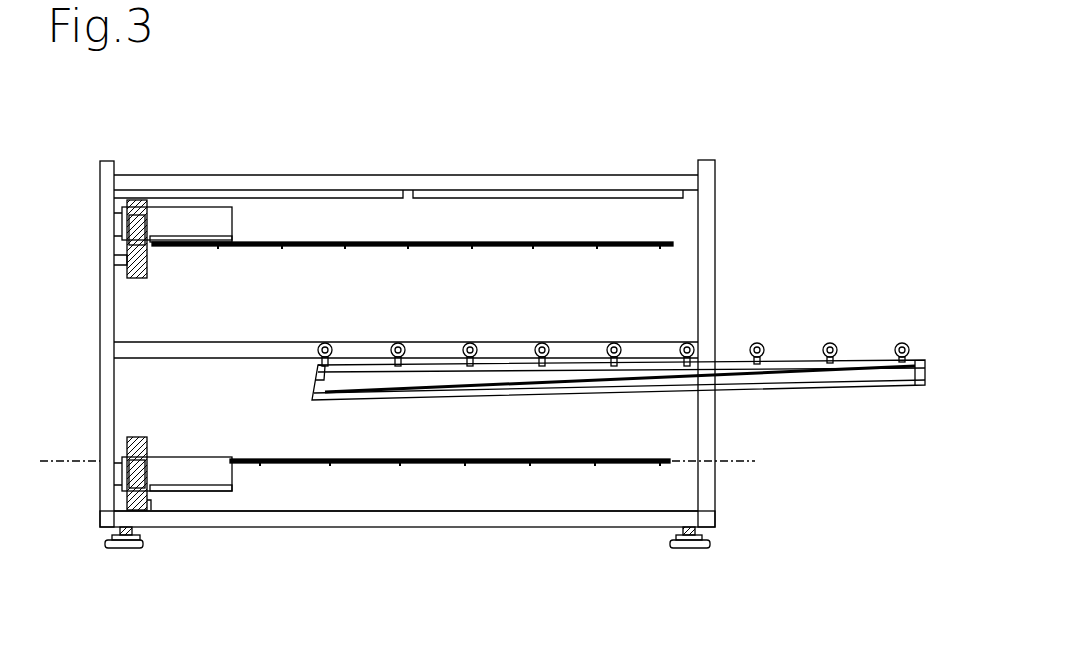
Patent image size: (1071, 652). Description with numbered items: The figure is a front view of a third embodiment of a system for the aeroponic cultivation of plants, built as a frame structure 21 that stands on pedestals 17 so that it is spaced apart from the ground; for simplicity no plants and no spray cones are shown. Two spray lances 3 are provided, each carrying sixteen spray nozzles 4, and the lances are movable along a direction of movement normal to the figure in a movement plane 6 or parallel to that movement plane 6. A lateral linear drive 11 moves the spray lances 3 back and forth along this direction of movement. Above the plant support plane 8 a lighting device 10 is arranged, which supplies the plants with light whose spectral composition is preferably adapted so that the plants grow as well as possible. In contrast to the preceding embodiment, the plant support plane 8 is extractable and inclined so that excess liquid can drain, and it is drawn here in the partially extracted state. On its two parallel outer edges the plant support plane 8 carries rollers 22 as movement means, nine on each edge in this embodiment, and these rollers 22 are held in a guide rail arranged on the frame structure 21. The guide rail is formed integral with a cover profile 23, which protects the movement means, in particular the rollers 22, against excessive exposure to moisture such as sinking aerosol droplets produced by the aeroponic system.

The spray lance 3 is at (645, 242).
The spray nozzle 4 is at (465, 462).
The movement plane 6 is at (720, 462).
The plant support plane 8 is at (770, 385).
The lighting device 10 is at (448, 197).
The linear drive 11 is at (205, 228).
The pedestal 17 is at (128, 540).
The frame structure 21 is at (705, 282).
The roller 22 is at (830, 345).
The cover profile 23 is at (150, 342).